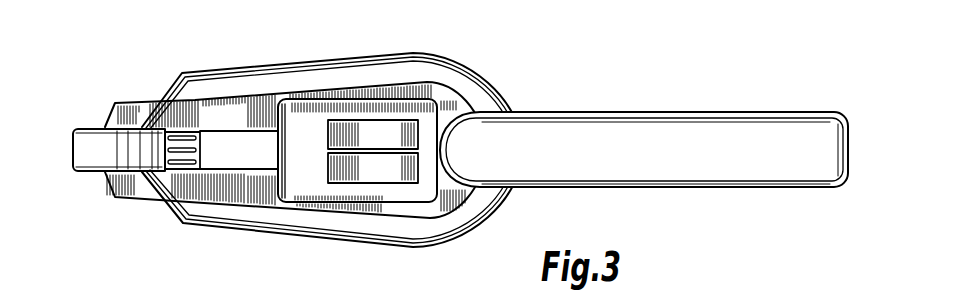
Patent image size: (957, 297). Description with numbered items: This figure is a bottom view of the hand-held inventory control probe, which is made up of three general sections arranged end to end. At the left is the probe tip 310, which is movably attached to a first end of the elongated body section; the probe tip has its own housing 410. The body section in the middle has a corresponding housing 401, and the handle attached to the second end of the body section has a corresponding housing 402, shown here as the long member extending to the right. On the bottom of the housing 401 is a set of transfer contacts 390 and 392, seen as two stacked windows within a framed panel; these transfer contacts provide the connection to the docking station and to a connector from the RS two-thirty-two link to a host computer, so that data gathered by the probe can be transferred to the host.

The probe tip 310 is at (74, 121).
The housing 401 is at (247, 100).
The housing 410 is at (115, 159).
The transfer contact 390 is at (396, 146).
The transfer contact 392 is at (396, 179).
The housing 402 is at (664, 158).